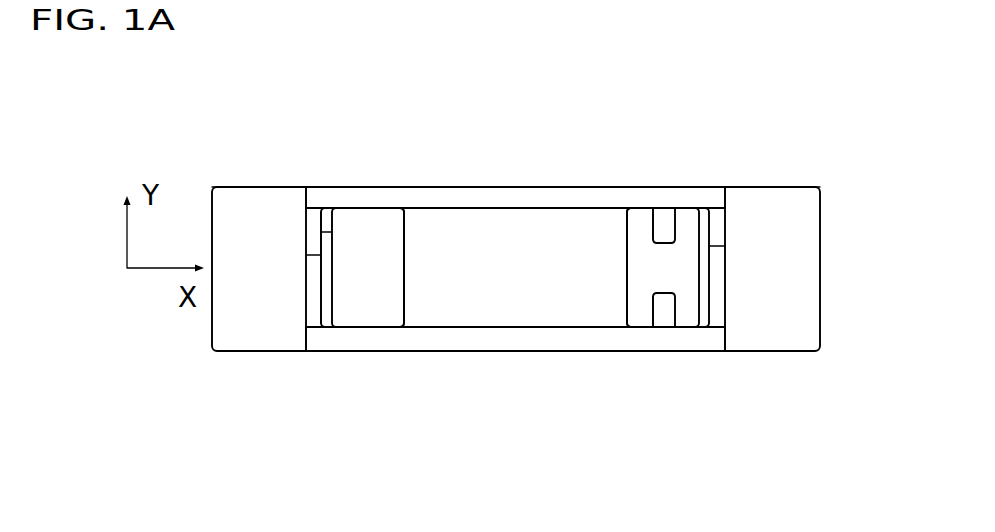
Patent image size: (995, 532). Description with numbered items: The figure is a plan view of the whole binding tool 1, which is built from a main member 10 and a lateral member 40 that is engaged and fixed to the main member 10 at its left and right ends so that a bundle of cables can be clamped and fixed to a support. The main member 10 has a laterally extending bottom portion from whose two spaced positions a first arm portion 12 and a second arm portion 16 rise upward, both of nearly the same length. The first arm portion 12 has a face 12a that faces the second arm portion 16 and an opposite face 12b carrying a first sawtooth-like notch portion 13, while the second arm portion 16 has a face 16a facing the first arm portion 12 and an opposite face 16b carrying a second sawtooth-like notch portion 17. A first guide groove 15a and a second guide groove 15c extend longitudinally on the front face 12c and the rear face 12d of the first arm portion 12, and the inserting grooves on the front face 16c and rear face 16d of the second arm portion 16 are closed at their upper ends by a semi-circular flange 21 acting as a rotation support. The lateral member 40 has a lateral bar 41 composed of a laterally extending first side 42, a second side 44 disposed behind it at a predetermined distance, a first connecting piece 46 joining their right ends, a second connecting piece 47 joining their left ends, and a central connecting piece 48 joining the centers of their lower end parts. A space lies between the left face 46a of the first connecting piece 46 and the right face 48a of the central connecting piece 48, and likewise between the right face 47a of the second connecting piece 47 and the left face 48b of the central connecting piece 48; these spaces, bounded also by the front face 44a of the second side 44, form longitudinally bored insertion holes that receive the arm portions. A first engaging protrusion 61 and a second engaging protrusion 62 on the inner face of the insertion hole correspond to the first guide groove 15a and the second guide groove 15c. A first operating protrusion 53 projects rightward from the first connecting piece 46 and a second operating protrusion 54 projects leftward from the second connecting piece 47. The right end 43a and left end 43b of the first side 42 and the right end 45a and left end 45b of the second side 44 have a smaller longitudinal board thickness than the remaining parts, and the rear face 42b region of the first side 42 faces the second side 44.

The binding tool 1 is at (827, 118).
The main member 10 is at (521, 226).
The first arm portion 12 is at (625, 294).
The face of first arm portion 12a is at (627, 237).
The face of first arm portion 12b is at (708, 232).
The front face of first arm portion 12c is at (686, 328).
The rear face of first arm portion 12d is at (700, 227).
The first sawtooth-like notch portion 13 is at (712, 246).
The first guide groove 15a is at (653, 308).
The second guide groove 15c is at (656, 224).
The second arm portion 16 is at (407, 280).
The face of second arm portion 16a is at (405, 243).
The face of second arm portion 16b is at (328, 232).
The front face of second arm portion 16c is at (372, 328).
The rear face of second arm portion 16d is at (350, 212).
The second sawtooth-like notch portion 17 is at (318, 254).
The semi-circular flange 21 is at (360, 227).
The lateral member 40 is at (825, 181).
The lateral bar 41 is at (524, 183).
The first side 42 is at (487, 343).
The bottom wall inner face 42b is at (450, 328).
The right end of first side 43a is at (725, 312).
The left end of first side 43b is at (325, 347).
The second side 44 is at (422, 192).
The front face of second side 44a is at (446, 208).
The right end of second side 45a is at (710, 197).
The left end of second side 45b is at (317, 194).
The first connecting piece 46 is at (737, 342).
The left face of first connecting piece 46a is at (708, 347).
The second connecting piece 47 is at (296, 339).
The right face of second connecting piece 47a is at (316, 325).
The central connecting piece 48 is at (523, 313).
The right face of central connecting piece 48a is at (628, 310).
The left face of central connecting piece 48b is at (398, 312).
The first operating protrusion 53 is at (811, 259).
The second operating protrusion 54 is at (225, 197).
The first engaging protrusion 61 is at (668, 305).
The second engaging protrusion 62 is at (665, 223).